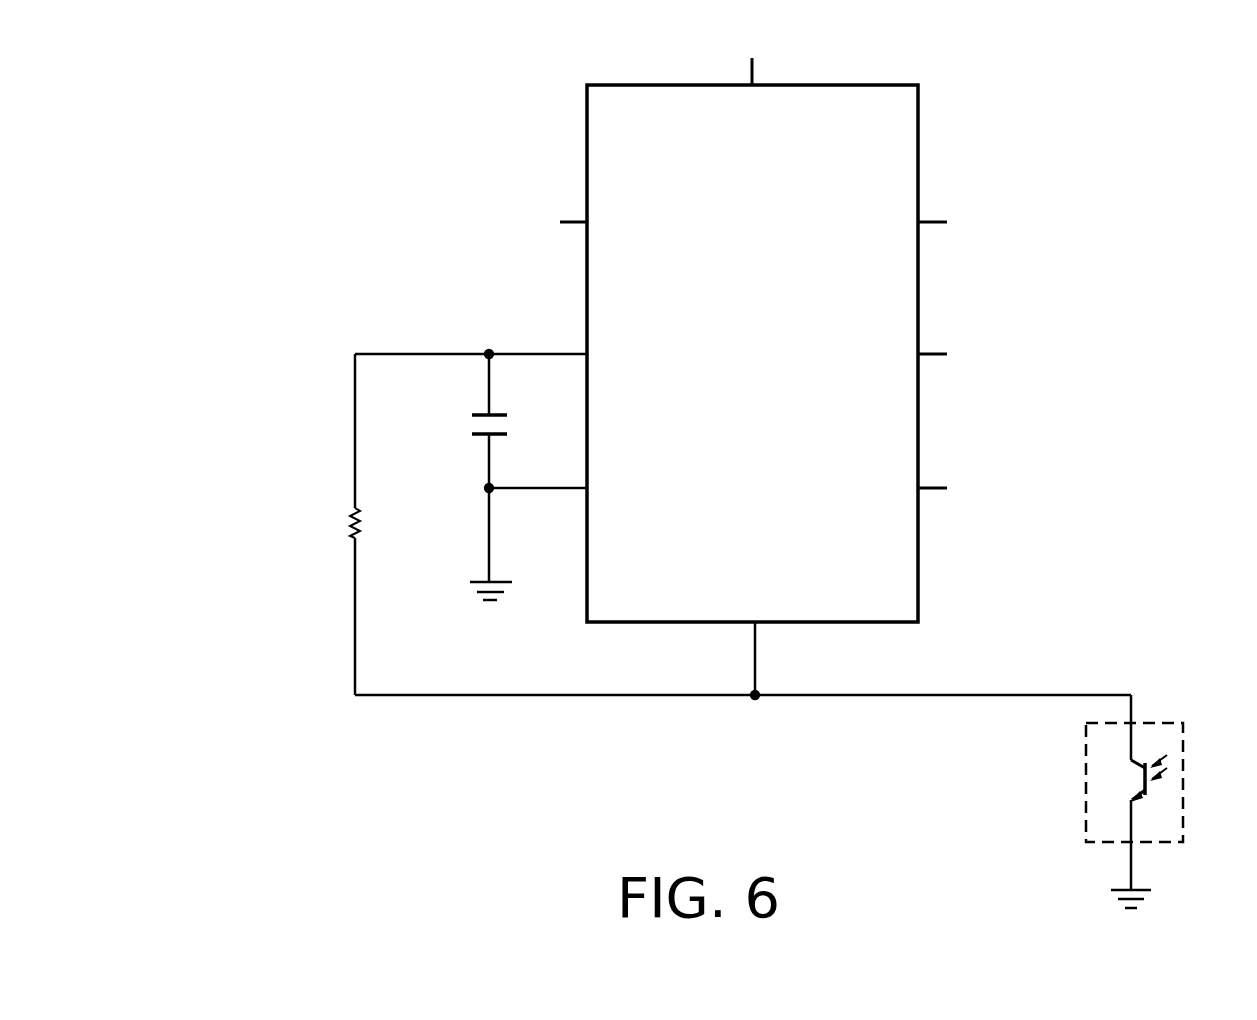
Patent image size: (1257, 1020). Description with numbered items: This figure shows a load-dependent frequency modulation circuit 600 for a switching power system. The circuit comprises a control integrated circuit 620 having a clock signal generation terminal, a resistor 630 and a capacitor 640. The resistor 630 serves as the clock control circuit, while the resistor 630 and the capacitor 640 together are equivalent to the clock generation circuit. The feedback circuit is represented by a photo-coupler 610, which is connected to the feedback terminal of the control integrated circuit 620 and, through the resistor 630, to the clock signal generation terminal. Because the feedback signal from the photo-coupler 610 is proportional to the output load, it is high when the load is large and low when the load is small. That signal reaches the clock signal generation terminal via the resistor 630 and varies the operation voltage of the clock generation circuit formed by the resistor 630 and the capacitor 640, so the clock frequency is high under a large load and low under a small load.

The load-dependent frequency modulation circuit 600 is at (246, 90).
The photo-coupler 610 is at (1160, 720).
The control integrated circuit 620 is at (883, 134).
The resistor 630 is at (345, 523).
The capacitor 640 is at (477, 442).